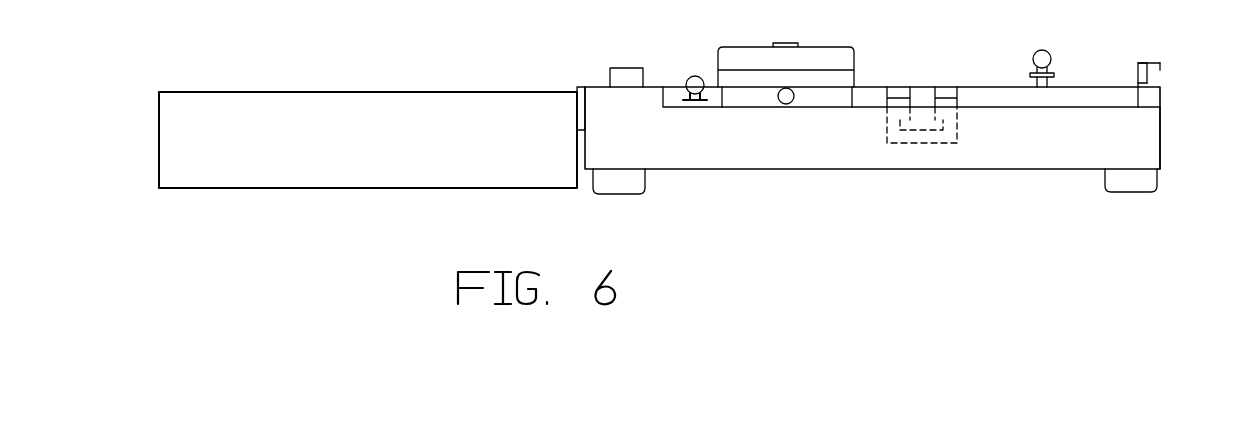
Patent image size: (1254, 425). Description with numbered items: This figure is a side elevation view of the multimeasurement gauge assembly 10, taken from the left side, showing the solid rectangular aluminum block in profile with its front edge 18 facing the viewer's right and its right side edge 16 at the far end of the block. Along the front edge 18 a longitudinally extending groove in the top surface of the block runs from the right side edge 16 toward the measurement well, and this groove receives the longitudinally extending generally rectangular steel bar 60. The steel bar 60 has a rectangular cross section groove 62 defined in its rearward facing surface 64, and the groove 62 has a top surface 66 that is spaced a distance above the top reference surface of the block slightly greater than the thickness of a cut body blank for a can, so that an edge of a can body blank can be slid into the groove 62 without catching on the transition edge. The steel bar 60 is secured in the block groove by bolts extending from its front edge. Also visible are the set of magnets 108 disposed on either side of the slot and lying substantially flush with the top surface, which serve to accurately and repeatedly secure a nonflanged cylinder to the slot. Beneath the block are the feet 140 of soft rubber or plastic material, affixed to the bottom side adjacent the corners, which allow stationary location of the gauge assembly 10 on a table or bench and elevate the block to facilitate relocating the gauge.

The multimeasurement gauge assembly 10 is at (988, 170).
The right side edge 16 is at (697, 151).
The front edge 18 is at (1161, 138).
The steel bar 60 is at (1161, 87).
The groove 62 is at (1161, 64).
The rearward facing surface 64 is at (1140, 63).
The top surface 66 is at (1138, 84).
The magnets 108 is at (946, 87).
The feet 140 is at (620, 196).